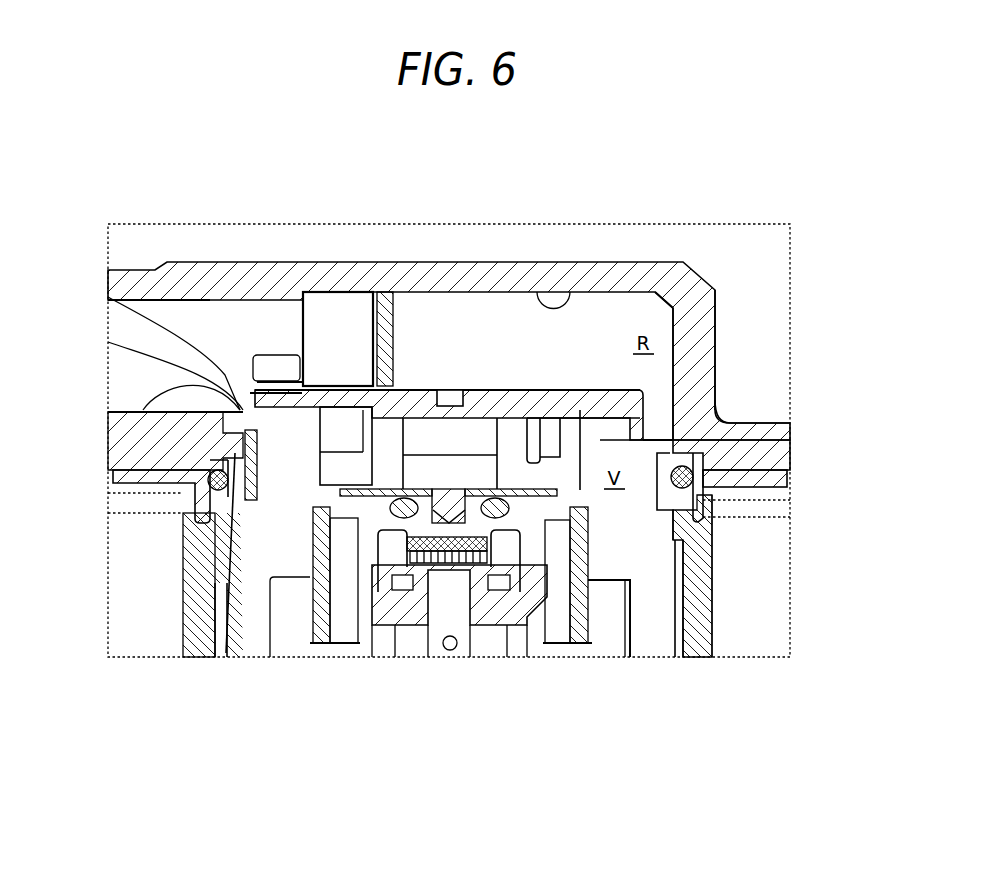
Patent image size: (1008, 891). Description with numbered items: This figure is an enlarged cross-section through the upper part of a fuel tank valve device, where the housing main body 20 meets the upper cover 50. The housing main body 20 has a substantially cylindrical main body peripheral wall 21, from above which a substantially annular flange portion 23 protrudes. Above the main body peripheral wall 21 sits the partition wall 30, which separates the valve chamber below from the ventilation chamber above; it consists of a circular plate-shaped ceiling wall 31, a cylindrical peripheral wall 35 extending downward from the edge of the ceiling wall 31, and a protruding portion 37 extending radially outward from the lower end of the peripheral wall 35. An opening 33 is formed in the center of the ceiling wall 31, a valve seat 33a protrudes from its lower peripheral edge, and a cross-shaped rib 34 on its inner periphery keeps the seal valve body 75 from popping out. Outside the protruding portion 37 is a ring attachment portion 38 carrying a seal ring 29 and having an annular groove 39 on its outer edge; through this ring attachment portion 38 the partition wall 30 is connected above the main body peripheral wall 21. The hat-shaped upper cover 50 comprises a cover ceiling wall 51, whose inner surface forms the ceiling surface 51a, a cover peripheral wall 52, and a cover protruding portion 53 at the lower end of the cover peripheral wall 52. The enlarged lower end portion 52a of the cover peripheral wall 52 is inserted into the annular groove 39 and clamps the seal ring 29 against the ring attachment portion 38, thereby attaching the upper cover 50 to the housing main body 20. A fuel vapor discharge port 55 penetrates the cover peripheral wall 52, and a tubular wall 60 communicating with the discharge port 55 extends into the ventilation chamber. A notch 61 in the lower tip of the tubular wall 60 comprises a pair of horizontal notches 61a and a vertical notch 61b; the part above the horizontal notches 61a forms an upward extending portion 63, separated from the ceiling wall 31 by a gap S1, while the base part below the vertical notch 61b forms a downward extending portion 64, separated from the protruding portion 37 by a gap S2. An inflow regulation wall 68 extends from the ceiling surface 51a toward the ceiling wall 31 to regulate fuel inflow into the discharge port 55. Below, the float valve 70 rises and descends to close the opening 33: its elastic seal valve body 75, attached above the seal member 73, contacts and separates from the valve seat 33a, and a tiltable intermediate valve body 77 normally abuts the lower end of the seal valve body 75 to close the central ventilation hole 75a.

The housing main body 20 is at (765, 633).
The main body peripheral wall 21 is at (183, 620).
The flange portion 23 is at (783, 470).
The seal ring 29 is at (717, 410).
The partition wall 30 is at (600, 440).
The ceiling wall 31 is at (300, 347).
The opening 33 is at (505, 388).
The valve seat 33a is at (655, 290).
The rib 34 is at (447, 388).
The peripheral wall 35 is at (250, 387).
The protruding portion 37 is at (183, 490).
The ring attachment portion 38 is at (732, 614).
The annular groove 39 is at (715, 527).
The upper cover 50 is at (342, 248).
The cover ceiling wall 51 is at (508, 410).
The ceiling surface 51a is at (564, 378).
The cover peripheral wall 52 is at (717, 347).
The lower end portion 52a is at (715, 492).
The cover protruding portion 53 is at (792, 447).
The fuel vapor discharge port 55 is at (120, 428).
The tubular wall 60 is at (325, 306).
The notch 61 is at (268, 480).
The horizontal notch 61a is at (350, 600).
The vertical notch 61b is at (271, 404).
The upward extending portion 63 is at (303, 355).
The downward extending portion 64 is at (214, 582).
The inflow regulation wall 68 is at (393, 290).
The float valve 70 is at (608, 503).
The seal member 73 is at (588, 500).
The seal valve body 75 is at (672, 598).
The ventilation hole 75a is at (476, 650).
The intermediate valve body 77 is at (545, 597).
The gap S1 is at (252, 383).
The gap S2 is at (112, 343).